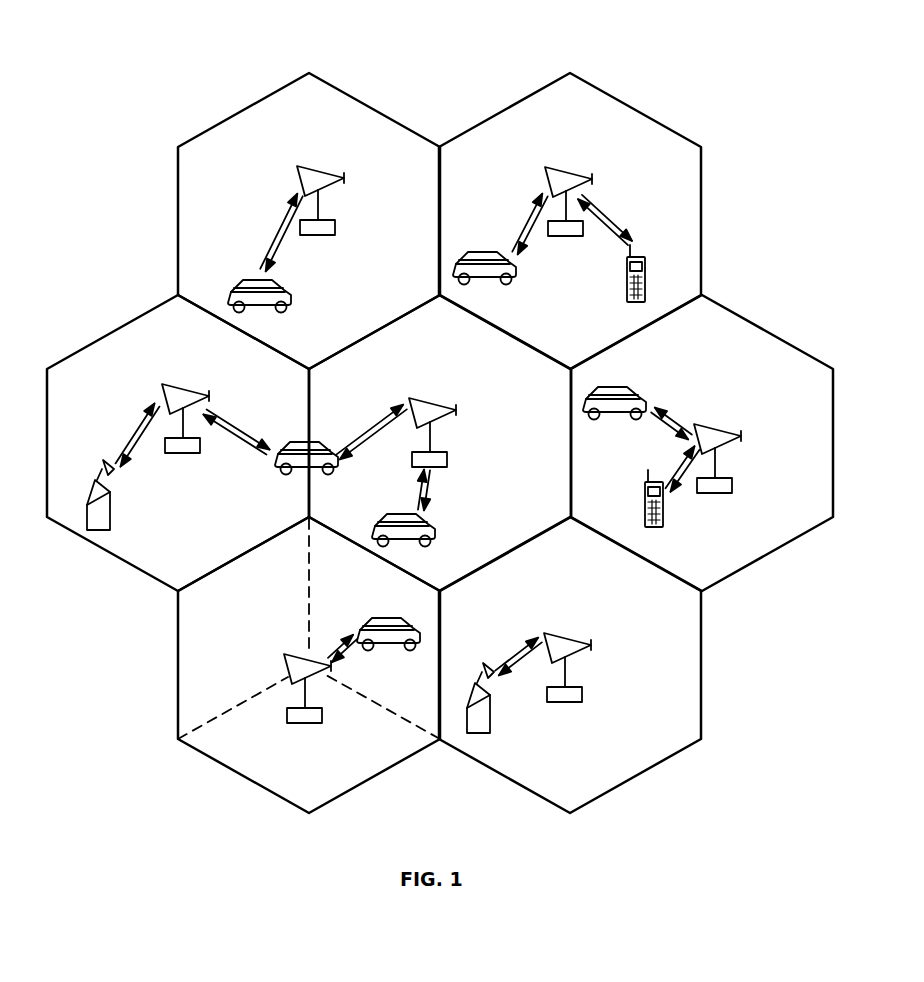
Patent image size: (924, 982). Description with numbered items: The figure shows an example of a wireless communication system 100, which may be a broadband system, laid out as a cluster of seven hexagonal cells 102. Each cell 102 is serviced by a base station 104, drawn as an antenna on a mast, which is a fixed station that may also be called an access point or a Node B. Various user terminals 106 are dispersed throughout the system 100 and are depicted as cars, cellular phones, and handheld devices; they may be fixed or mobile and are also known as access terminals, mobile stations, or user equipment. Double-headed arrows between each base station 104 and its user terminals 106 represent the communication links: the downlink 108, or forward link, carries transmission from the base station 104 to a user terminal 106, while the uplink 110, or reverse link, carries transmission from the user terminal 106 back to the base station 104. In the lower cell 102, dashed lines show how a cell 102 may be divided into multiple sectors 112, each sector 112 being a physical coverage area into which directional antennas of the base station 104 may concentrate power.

The wireless communication system 100 is at (816, 88).
The cell 102 is at (248, 107).
The base station 104 is at (303, 166).
The user terminal 106 is at (257, 283).
The downlink 108 is at (282, 246).
The uplink 110 is at (268, 233).
The sector 112 is at (387, 748).